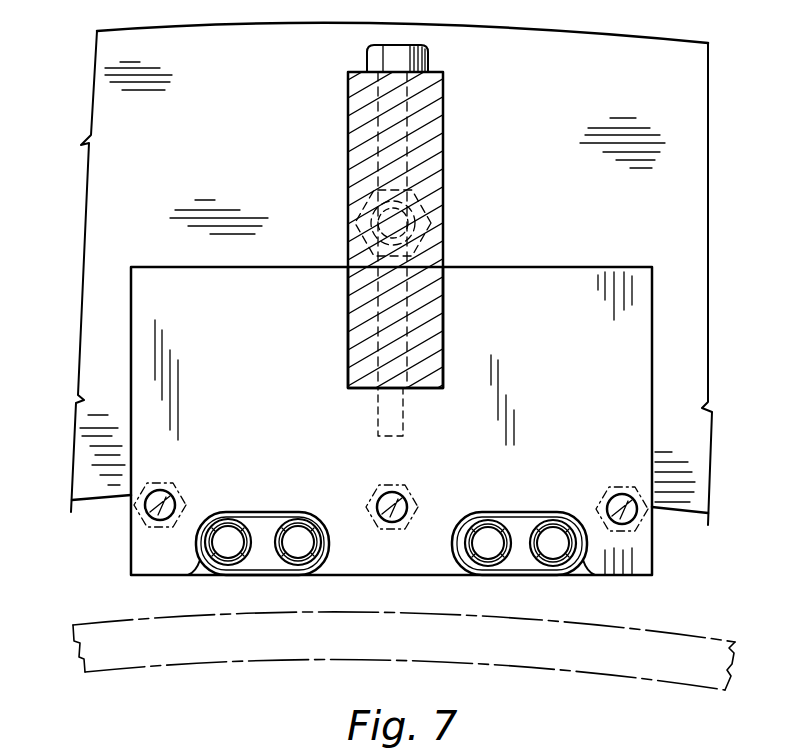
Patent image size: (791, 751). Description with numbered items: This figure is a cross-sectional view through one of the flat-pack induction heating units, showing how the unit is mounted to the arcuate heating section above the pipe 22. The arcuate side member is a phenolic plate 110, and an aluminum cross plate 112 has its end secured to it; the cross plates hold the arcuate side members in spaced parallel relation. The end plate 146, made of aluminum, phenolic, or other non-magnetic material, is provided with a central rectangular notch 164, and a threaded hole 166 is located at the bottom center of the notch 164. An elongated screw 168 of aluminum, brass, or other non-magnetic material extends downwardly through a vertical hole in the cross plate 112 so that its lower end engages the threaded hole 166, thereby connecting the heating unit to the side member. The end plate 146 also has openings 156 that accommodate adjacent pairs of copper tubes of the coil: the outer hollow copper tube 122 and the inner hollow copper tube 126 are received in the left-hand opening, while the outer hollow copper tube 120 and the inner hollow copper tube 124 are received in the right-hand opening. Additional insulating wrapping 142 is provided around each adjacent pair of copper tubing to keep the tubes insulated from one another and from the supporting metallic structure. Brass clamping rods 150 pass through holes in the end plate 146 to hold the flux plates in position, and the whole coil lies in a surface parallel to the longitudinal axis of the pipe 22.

The pipe 22 is at (142, 657).
The phenolic plate 110 is at (583, 90).
The aluminum cross plate 112 is at (420, 135).
The outer hollow copper tube 120 is at (221, 574).
The outer hollow copper tube 122 is at (550, 574).
The inner hollow copper tube 124 is at (294, 570).
The inner hollow copper tube 126 is at (480, 574).
The additional wrapping 142 is at (263, 574).
The end plate 146 is at (560, 304).
The brass clamping rod 150 is at (170, 490).
The opening 156 is at (197, 573).
The central rectangular notch 164 is at (347, 328).
The threaded hole 166 is at (405, 418).
The elongated screw 168 is at (375, 60).